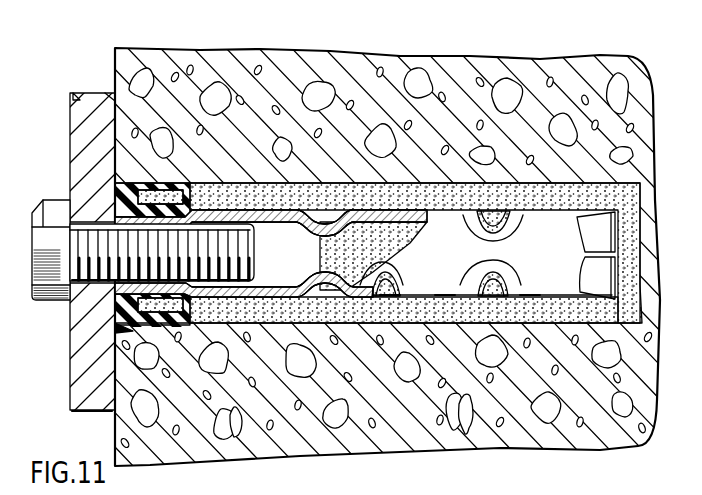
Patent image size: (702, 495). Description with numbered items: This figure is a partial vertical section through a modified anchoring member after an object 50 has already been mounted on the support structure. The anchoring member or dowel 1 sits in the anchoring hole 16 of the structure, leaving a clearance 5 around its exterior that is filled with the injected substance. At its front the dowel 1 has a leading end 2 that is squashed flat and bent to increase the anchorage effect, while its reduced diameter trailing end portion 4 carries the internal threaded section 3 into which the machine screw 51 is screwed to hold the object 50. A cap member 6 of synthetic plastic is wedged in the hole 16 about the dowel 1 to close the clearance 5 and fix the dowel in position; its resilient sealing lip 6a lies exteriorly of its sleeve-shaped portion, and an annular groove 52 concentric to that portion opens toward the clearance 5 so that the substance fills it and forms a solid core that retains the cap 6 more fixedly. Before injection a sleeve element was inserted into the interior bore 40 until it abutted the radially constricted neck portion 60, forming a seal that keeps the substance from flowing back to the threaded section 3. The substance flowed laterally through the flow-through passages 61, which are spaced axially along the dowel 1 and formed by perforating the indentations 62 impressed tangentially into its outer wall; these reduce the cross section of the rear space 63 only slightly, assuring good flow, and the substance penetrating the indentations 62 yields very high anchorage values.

The anchoring member or dowel 1 is at (448, 233).
The front leading end 2 is at (593, 280).
The internal threaded section 3 is at (78, 288).
The trailing end portion 4 is at (118, 115).
The clearance 5 is at (228, 308).
The cap member 6 is at (68, 396).
The resilient sealing lip 6a is at (128, 180).
The anchoring hole 16 is at (642, 432).
The interior bore 40 is at (285, 265).
The object 50 is at (75, 92).
The machine screw 51 is at (88, 242).
The annular groove 52 is at (182, 197).
The constriction or radially constricted neck portion 60 is at (315, 238).
The openings or flow-through passages 61 is at (525, 230).
The indentations 62 is at (516, 278).
The rear space 63 is at (347, 195).